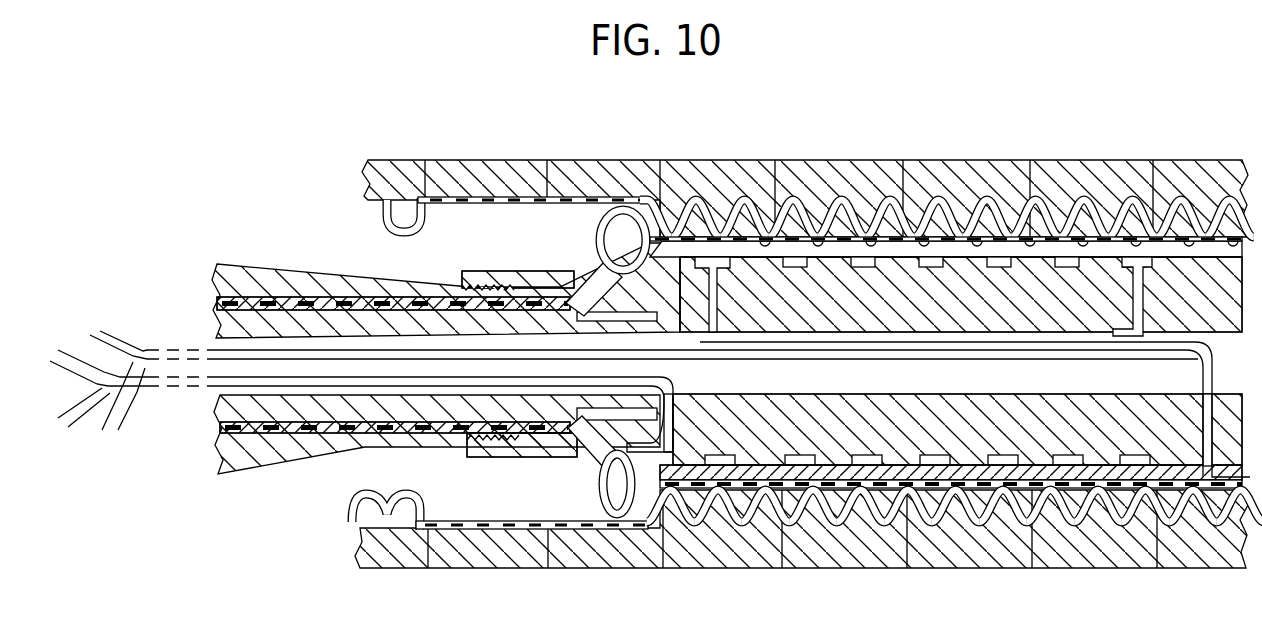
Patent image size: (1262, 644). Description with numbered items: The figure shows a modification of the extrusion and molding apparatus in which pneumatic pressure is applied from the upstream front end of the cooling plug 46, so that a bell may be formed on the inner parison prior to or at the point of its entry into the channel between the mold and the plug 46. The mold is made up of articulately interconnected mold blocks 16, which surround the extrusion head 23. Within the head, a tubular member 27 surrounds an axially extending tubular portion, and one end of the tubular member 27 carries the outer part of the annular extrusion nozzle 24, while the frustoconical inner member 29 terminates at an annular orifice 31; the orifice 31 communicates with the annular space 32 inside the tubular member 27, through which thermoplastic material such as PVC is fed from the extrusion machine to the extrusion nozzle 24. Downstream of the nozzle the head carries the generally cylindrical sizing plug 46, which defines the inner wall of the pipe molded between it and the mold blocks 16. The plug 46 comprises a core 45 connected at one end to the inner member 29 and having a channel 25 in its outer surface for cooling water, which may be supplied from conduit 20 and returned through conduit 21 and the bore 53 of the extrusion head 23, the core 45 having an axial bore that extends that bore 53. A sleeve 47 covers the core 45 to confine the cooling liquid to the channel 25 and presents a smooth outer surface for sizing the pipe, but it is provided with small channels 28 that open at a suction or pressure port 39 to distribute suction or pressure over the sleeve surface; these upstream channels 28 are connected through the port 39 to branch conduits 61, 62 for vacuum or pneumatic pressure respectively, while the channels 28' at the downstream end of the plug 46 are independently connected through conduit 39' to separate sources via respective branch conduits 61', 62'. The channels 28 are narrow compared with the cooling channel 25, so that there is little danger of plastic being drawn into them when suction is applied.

The mold blocks 16 is at (396, 188).
The extrusion nozzle 24 is at (577, 550).
The extrusion head 23 is at (250, 262).
The bore 53 is at (220, 318).
The annular space 32 is at (397, 288).
The inner member 29 is at (567, 283).
The annular orifice 31 is at (575, 197).
The channel 25 is at (947, 270).
The sizing plug 46 is at (847, 293).
The conduit 20 is at (720, 334).
The conduit 21 is at (1120, 293).
The tubular member 27 is at (430, 438).
The channel 28 is at (619, 527).
The suction or pressure port 39 is at (434, 436).
The channels 28' is at (951, 507).
The conduit 39' is at (951, 550).
The sleeve 47 is at (958, 520).
The branch conduit 61 is at (119, 347).
The branch conduit 61' is at (129, 332).
The branch conduit 62 is at (75, 432).
The branch conduit 62' is at (136, 419).
The core 45 is at (1187, 337).